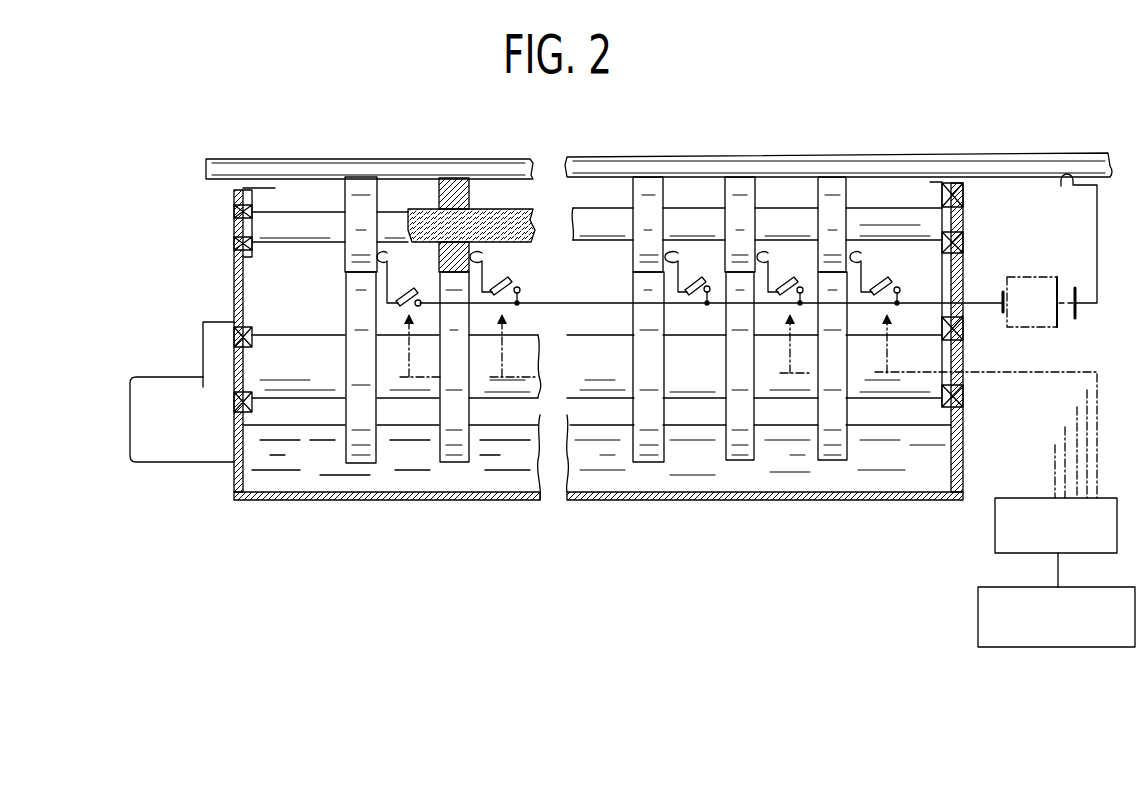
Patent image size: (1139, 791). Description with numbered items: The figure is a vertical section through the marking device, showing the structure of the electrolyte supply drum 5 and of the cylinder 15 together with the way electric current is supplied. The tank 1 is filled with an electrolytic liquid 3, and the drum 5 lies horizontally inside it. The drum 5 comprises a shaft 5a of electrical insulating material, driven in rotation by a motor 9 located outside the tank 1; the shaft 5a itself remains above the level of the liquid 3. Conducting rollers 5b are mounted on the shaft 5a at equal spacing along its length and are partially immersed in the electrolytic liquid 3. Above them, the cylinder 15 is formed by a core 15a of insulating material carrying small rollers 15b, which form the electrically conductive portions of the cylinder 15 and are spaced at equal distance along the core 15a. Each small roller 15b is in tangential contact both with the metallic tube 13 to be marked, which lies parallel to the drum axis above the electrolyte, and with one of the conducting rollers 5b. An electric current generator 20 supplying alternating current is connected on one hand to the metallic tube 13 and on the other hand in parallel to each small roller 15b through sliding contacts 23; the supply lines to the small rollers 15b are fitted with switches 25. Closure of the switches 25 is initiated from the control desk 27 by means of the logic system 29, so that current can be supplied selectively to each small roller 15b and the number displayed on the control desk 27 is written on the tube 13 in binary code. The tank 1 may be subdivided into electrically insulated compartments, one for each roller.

The tank 1 is at (282, 503).
The electrolytic liquid 3 is at (795, 460).
The electrolyte supply drum 5 is at (625, 462).
The shaft 5a is at (310, 347).
The conducting rollers 5b is at (448, 463).
The motor 9 is at (182, 387).
The metallic tube 13 is at (270, 163).
The cylinder 15 is at (622, 197).
The core 15a is at (903, 210).
The small rollers 15b is at (837, 182).
The electric current generator 20 is at (1053, 332).
The sliding contacts 23 is at (773, 257).
The switches 25 is at (706, 305).
The control desk 27 is at (1056, 617).
The logic system 29 is at (1040, 538).